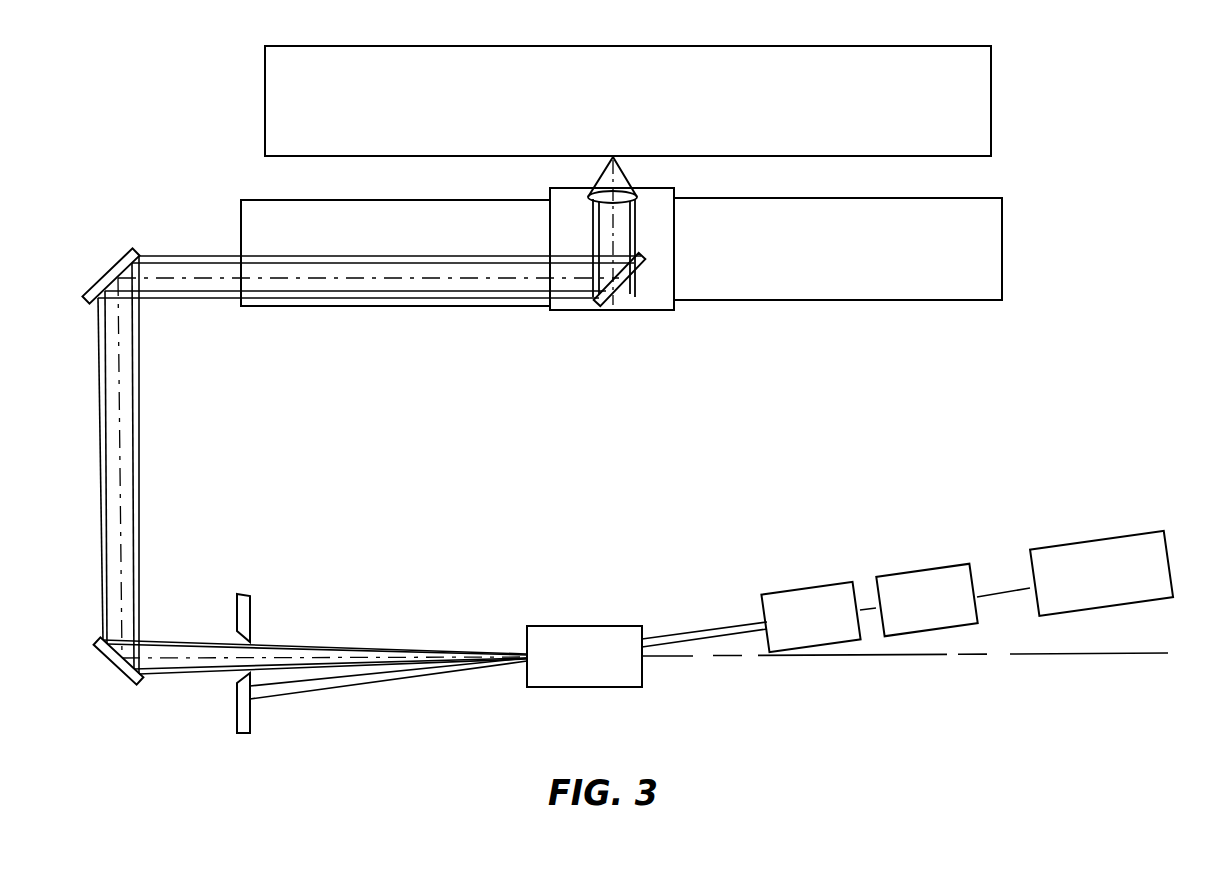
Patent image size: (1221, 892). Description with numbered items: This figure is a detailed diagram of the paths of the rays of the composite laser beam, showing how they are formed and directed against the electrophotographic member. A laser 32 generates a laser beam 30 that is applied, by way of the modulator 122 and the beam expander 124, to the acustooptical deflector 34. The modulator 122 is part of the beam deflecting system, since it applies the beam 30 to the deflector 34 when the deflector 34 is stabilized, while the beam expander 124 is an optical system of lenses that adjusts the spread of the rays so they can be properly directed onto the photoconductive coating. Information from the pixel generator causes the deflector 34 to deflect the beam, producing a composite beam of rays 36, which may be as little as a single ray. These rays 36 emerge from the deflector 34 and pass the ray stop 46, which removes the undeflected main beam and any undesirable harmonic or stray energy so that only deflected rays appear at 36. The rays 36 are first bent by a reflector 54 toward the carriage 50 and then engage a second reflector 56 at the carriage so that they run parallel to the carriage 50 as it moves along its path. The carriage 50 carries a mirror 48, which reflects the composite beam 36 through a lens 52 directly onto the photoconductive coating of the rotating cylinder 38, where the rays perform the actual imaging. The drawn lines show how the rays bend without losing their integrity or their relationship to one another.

The laser beam 30 is at (995, 595).
The laser 32 is at (1092, 541).
The acustooptical deflector 34 is at (590, 626).
The composite beam of rays 36 is at (335, 648).
The coated cylinder 38 is at (851, 106).
The ray stop 46 is at (242, 593).
The mirror 48 is at (617, 292).
The carriage 50 is at (924, 242).
The lens 52 is at (606, 168).
The reflector 54 is at (114, 666).
The second reflector 56 is at (103, 270).
The modulator 122 is at (915, 571).
The beam expander 124 is at (795, 590).